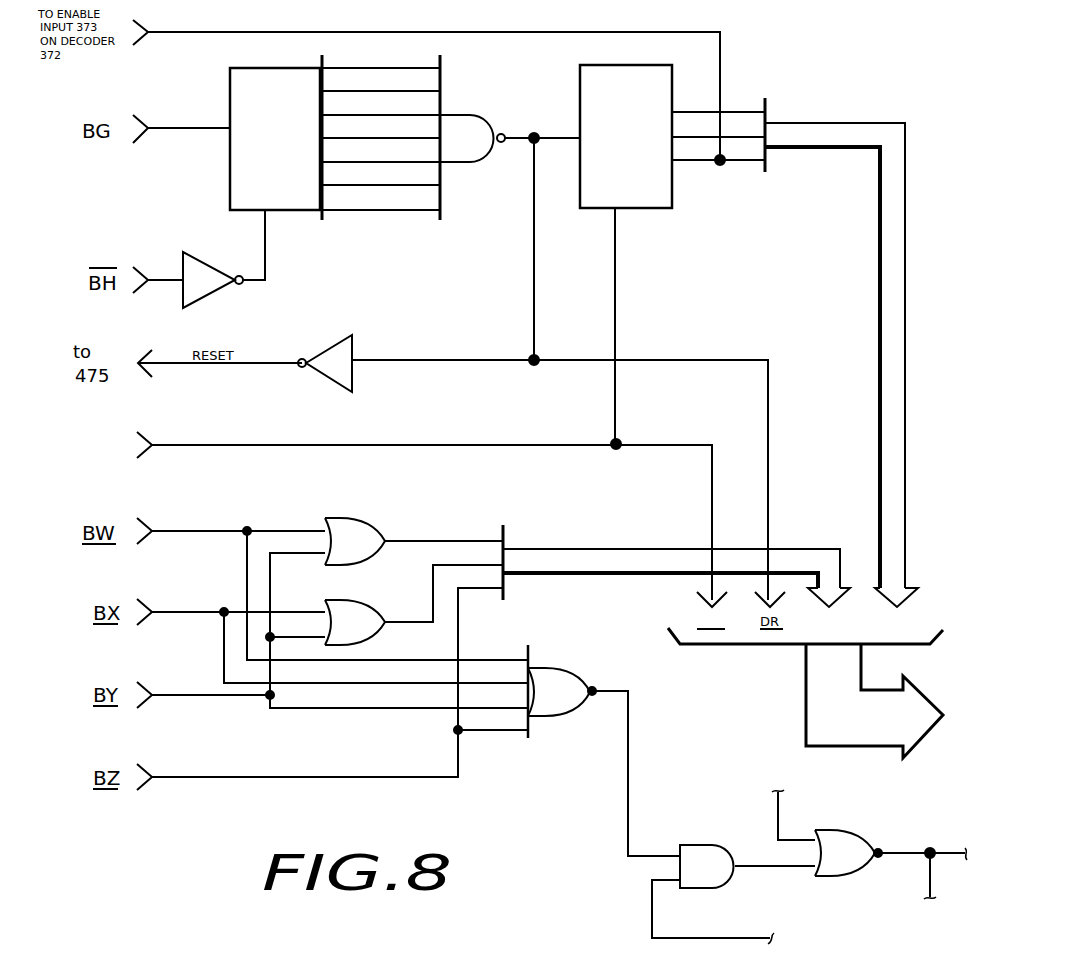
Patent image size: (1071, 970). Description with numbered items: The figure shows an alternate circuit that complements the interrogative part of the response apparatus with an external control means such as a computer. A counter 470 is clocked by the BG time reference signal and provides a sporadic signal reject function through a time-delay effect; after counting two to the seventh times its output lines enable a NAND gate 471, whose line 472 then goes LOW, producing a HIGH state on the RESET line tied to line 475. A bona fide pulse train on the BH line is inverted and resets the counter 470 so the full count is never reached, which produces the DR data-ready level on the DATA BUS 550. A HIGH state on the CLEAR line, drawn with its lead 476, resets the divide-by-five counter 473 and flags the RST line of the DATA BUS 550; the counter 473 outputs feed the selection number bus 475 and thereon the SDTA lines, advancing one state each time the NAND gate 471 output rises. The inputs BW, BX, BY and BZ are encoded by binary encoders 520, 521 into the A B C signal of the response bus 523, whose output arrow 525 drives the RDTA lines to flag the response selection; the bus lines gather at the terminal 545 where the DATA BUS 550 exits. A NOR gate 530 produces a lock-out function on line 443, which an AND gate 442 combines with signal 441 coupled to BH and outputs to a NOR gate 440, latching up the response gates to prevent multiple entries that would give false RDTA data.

The counter 470 is at (238, 106).
The NAND gate 471 is at (482, 128).
The line 472 is at (530, 287).
The ÷5 counter 473 is at (661, 85).
The selection number bus 475 is at (855, 130).
The clear line 476 is at (403, 445).
The binary encoder 520 is at (366, 536).
The binary encoder 521 is at (362, 616).
The response bus 523 is at (464, 556).
The response bus output arrow 525 is at (812, 558).
The NOR gate 530 is at (568, 687).
The line 443 is at (632, 760).
The AND gate 442 is at (708, 859).
The signal 441 is at (749, 914).
The NOR gate 440 is at (853, 847).
The receiver terminal 545 is at (792, 648).
The DATA BUS 550 is at (927, 712).